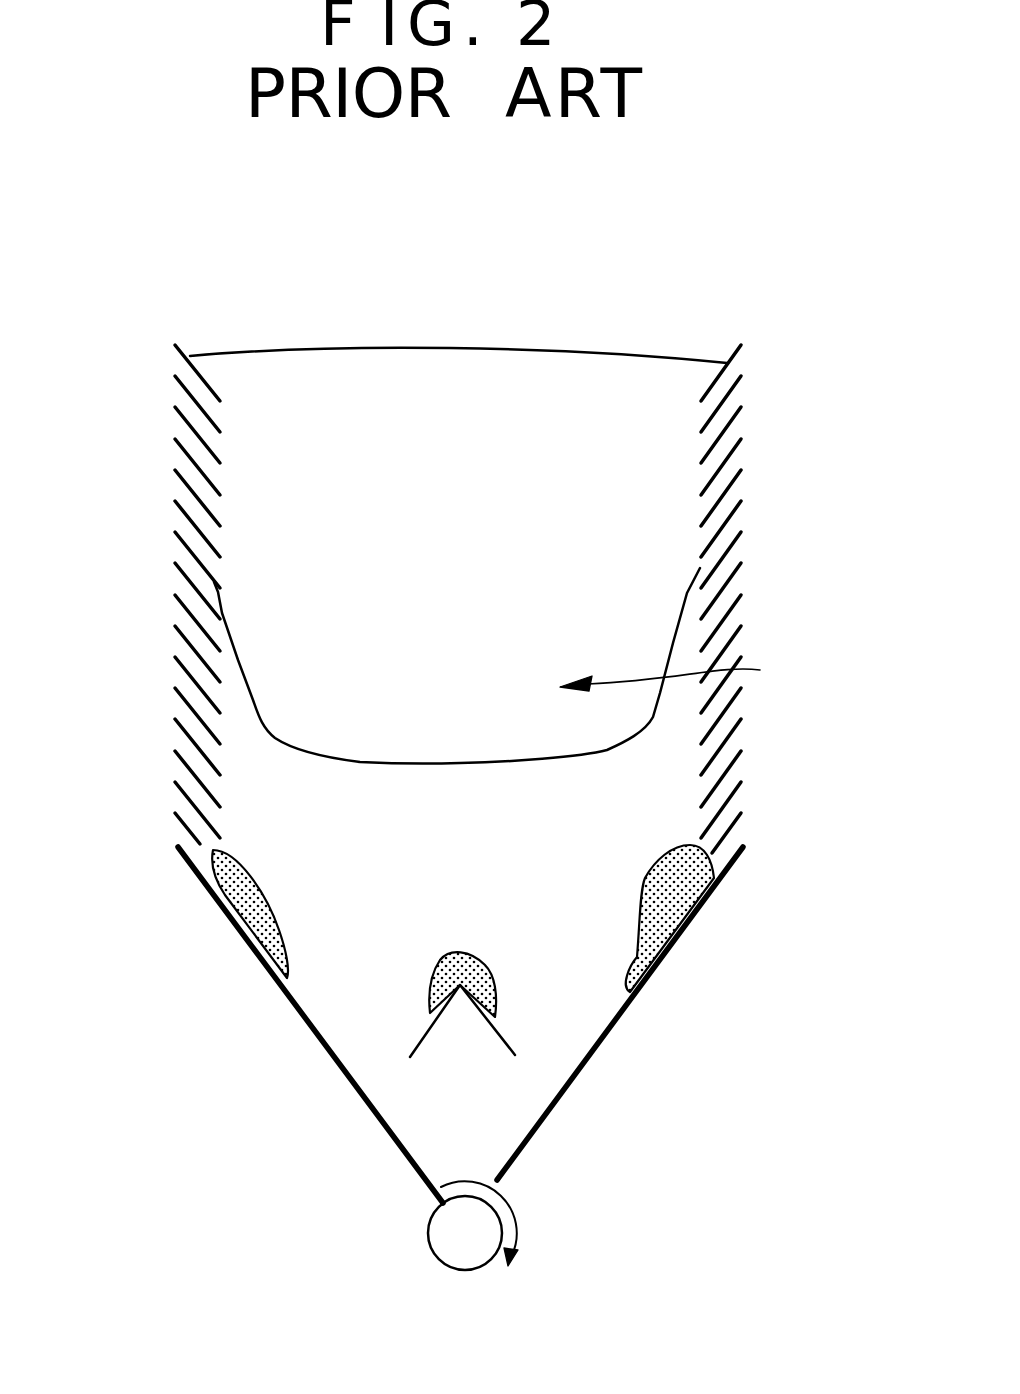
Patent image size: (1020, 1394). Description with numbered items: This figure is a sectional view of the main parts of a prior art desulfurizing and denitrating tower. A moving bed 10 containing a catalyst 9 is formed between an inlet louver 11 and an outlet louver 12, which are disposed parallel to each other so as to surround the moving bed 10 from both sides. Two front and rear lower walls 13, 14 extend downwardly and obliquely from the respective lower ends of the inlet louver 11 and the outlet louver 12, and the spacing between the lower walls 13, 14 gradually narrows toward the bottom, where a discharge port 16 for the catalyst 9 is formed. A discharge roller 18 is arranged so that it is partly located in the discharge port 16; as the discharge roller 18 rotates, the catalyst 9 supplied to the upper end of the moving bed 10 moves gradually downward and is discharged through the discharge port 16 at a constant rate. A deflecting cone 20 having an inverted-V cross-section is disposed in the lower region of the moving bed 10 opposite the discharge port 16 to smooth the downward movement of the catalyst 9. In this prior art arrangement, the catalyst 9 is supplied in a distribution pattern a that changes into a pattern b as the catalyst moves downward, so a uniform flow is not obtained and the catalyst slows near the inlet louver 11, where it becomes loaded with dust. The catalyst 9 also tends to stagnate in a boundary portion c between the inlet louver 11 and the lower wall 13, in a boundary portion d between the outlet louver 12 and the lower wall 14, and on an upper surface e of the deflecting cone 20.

The catalyst 9 is at (470, 583).
The moving bed 10 is at (836, 686).
The inlet louver 11 is at (177, 550).
The outlet louver 12 is at (740, 543).
The lower wall 13 is at (322, 1042).
The lower wall 14 is at (607, 1047).
The discharge port 16 is at (435, 1183).
The discharge roller 18 is at (472, 1268).
The deflecting cone 20 is at (412, 1045).
The pattern a is at (483, 352).
The pattern b is at (461, 766).
The boundary portion c is at (272, 897).
The boundary portion d is at (640, 891).
The upper surface e is at (482, 958).